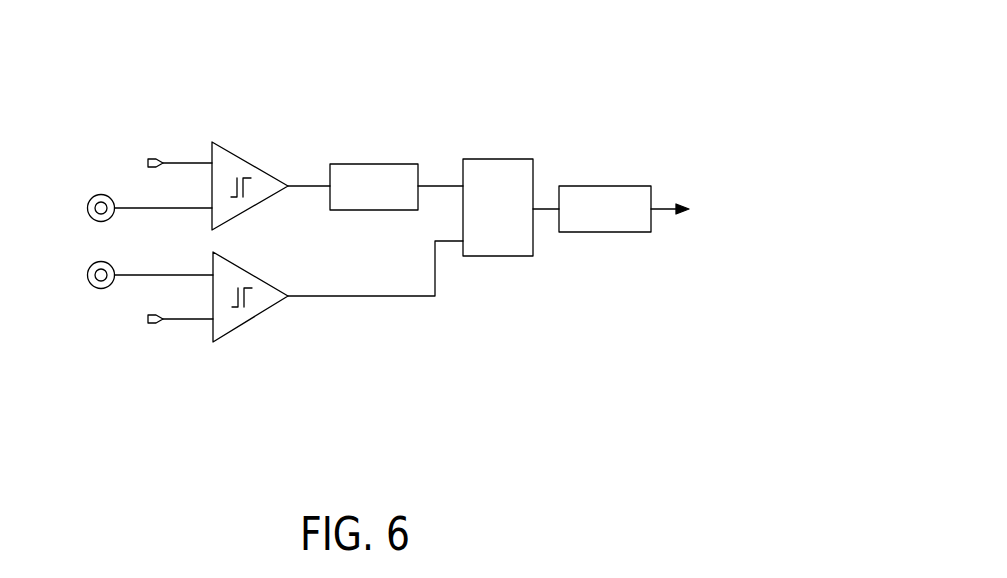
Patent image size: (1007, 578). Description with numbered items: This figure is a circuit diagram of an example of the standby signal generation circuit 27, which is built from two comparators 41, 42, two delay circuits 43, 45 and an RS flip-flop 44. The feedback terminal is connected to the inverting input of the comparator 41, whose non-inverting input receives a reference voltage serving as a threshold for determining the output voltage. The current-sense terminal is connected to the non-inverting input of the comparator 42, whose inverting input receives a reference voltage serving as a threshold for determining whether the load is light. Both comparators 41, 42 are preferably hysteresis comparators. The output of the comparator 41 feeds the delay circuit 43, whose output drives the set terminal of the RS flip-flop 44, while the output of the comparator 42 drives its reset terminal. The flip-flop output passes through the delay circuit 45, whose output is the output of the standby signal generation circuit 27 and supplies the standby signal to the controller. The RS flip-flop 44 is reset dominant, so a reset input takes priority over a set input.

The standby signal generation circuit 27 is at (598, 72).
The comparator 41 is at (250, 163).
The comparator 42 is at (252, 274).
The delay circuit 43 is at (374, 163).
The RS flip-flop 44 is at (499, 158).
The delay circuit 45 is at (606, 185).